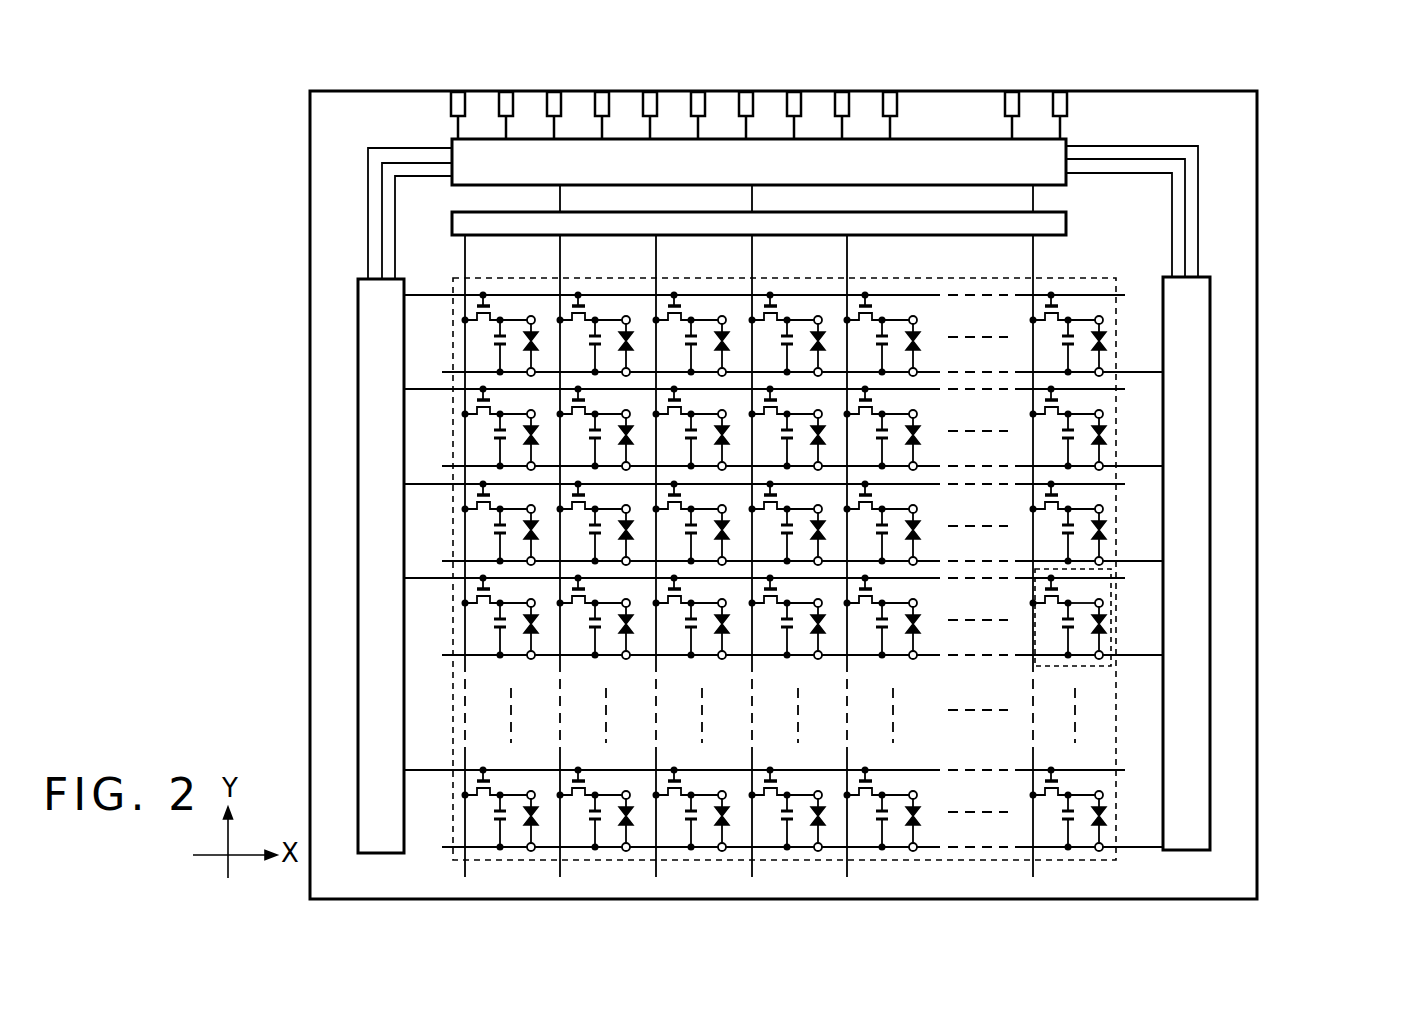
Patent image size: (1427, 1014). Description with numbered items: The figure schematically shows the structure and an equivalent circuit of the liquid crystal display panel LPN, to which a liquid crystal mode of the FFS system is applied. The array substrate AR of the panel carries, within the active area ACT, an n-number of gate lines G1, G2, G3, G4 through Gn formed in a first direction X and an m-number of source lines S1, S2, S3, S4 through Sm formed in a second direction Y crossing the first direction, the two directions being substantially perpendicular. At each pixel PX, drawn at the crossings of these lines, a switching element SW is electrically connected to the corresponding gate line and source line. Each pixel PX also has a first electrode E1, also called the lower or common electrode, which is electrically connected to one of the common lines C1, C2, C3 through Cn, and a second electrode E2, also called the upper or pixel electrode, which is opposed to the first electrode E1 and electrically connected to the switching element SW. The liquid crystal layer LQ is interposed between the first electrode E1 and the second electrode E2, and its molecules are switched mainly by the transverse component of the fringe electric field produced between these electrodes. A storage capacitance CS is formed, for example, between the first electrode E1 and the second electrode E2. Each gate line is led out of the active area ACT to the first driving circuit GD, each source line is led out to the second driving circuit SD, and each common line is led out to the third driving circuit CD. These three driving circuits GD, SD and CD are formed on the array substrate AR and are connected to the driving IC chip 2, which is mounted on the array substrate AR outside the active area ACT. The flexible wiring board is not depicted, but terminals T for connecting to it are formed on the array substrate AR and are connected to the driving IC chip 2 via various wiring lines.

The liquid crystal display panel LPN is at (1302, 97).
The array substrate AR is at (1230, 240).
The terminals T is at (1059, 91).
The driving IC chip 2 is at (1067, 136).
The second driving circuit SD is at (1066, 219).
The first driving circuit GD is at (358, 698).
The third driving circuit CD is at (1210, 335).
The active area ACT is at (1116, 406).
The source line S1 is at (466, 259).
The source line S2 is at (561, 259).
The source line S3 is at (657, 259).
The source line S4 is at (753, 259).
The source line Sm is at (1034, 258).
The gate line G1 is at (424, 295).
The gate line G2 is at (424, 389).
The gate line G3 is at (424, 484).
The gate line G4 is at (424, 578).
The gate line Gn is at (424, 770).
The common line C1 is at (1135, 371).
The common line C2 is at (1135, 466).
The common line C3 is at (1135, 561).
The common line Cn is at (1135, 847).
The pixel PX is at (1083, 628).
The switching element SW is at (1042, 592).
The storage capacitance CS is at (1060, 627).
The liquid crystal layer LQ is at (1106, 622).
The first electrode E1 is at (1103, 655).
The second electrode E2 is at (1103, 603).